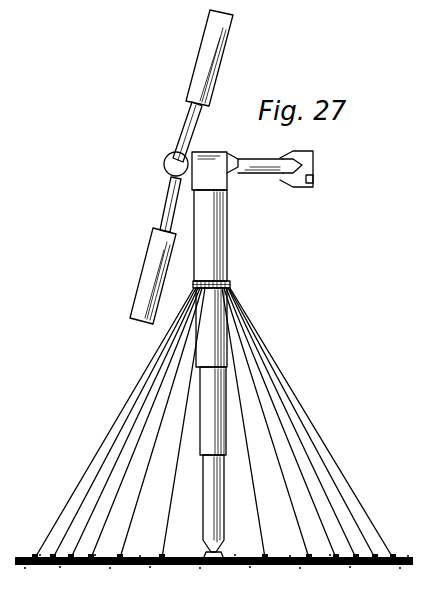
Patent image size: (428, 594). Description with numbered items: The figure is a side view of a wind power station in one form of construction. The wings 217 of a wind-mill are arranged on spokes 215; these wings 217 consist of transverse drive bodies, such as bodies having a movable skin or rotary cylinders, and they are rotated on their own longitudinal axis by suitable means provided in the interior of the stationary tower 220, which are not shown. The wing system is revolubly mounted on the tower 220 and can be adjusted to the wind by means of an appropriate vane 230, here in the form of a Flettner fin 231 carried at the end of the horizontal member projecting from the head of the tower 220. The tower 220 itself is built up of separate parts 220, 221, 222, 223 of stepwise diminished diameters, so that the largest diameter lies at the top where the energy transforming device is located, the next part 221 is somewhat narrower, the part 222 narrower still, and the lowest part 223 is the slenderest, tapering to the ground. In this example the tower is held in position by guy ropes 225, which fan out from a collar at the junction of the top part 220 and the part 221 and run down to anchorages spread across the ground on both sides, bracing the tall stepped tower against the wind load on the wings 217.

The spokes 215 is at (190, 130).
The wings 217 is at (210, 58).
The tower 220 is at (222, 240).
The tower part 221 is at (212, 346).
The tower part 222 is at (215, 421).
The tower part 223 is at (215, 515).
The guy ropes 225 is at (88, 518).
The vane 230 is at (310, 163).
The Flettner fin 231 is at (313, 180).